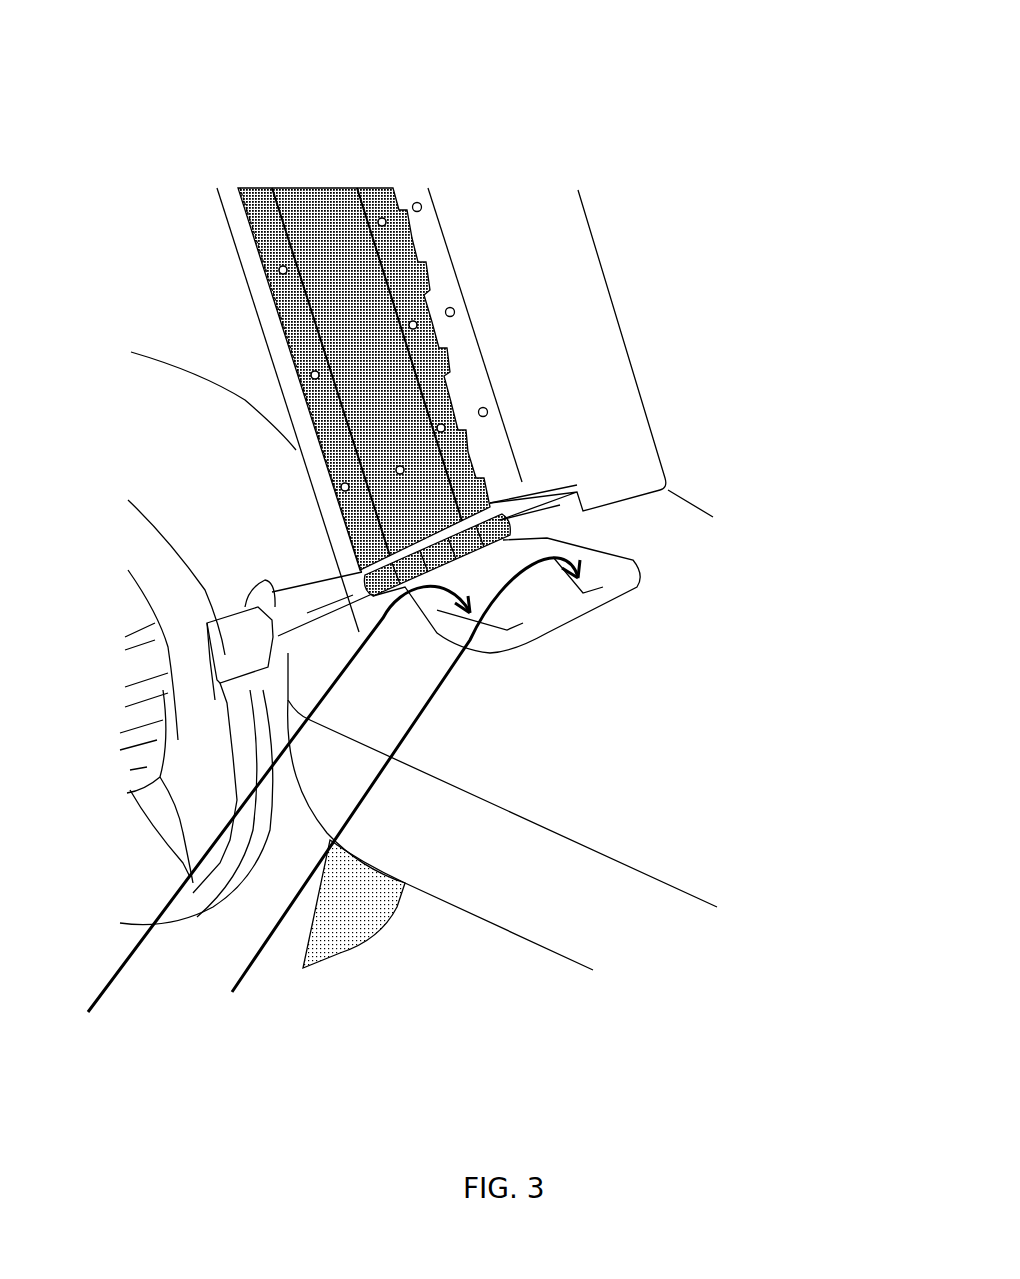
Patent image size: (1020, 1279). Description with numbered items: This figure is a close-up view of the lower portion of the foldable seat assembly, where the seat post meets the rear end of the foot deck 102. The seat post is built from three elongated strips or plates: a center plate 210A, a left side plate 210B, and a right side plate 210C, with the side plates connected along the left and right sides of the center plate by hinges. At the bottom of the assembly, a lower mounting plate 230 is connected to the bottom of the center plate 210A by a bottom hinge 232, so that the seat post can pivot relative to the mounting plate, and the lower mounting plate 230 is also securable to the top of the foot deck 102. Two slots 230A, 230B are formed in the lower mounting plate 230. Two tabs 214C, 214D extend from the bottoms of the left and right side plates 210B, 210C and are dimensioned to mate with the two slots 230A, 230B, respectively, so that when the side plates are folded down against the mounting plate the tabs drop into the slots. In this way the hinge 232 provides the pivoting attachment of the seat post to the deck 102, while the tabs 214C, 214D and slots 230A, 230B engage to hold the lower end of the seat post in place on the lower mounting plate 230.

The center plate 210A is at (288, 170).
The left side plate 210B is at (557, 228).
The right side plate 210C is at (237, 231).
The bottom hinge 232 is at (437, 540).
The tab 214C is at (628, 445).
The tab 214D is at (347, 605).
The lower mounting plate 230 is at (620, 572).
The slot 230A is at (263, 819).
The slot 230B is at (382, 805).
The deck 102 is at (553, 790).